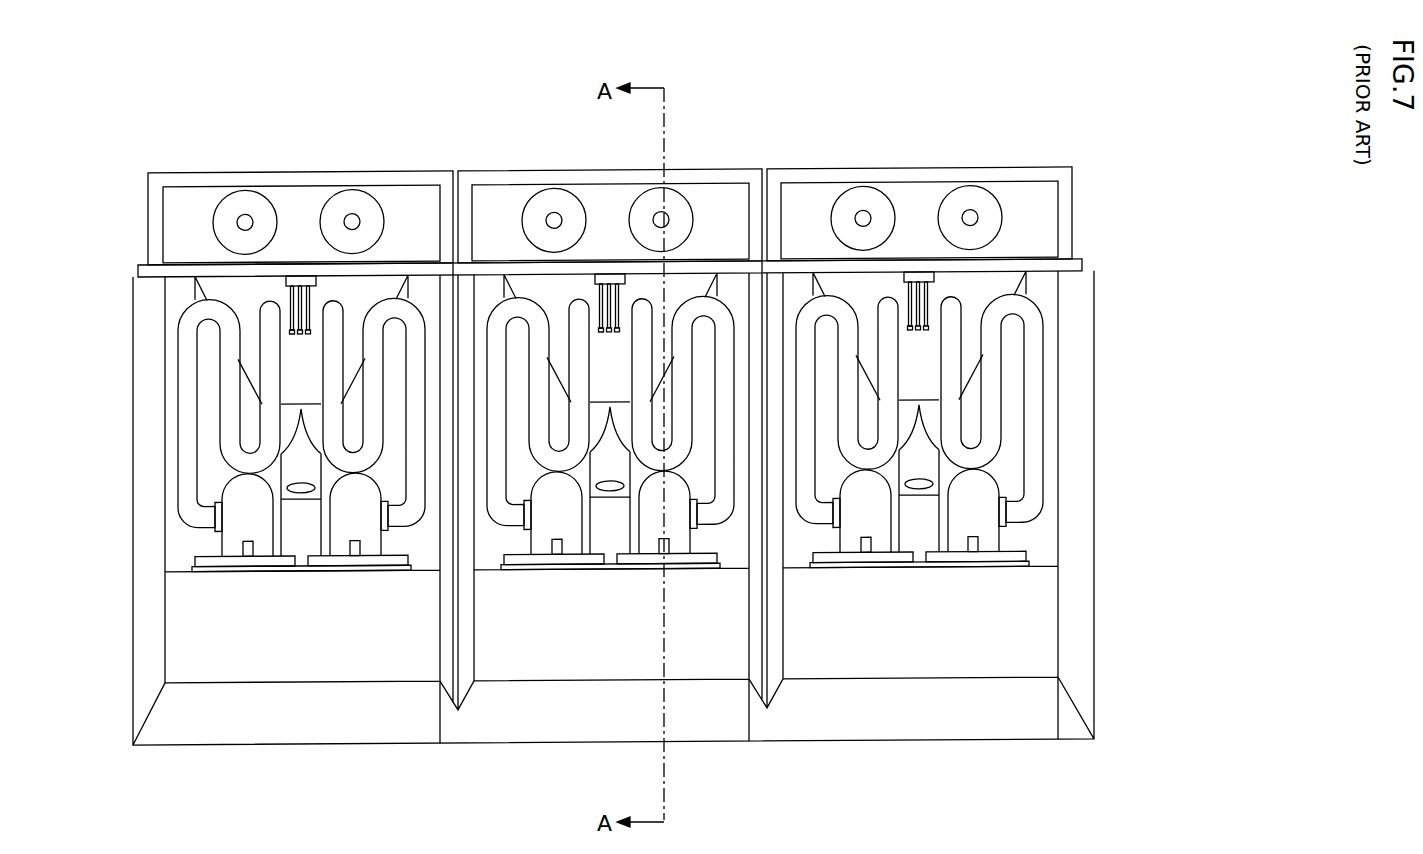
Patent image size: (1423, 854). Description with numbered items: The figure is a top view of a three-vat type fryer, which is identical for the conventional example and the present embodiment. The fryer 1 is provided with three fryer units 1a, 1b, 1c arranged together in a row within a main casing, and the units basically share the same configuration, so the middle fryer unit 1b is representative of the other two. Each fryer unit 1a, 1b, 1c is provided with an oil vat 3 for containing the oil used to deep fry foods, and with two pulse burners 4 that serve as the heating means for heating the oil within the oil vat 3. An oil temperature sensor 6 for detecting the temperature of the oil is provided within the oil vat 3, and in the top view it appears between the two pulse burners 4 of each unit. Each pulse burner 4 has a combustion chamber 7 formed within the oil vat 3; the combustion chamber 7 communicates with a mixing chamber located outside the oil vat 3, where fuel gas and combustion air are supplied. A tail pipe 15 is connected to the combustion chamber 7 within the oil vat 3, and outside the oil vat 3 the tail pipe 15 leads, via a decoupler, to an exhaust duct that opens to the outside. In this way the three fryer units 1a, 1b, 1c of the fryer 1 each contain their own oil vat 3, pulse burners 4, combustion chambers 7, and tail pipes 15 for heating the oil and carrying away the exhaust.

The fryer 1 is at (687, 402).
The fryer unit 1a is at (260, 152).
The fryer unit 1b is at (694, 142).
The fryer unit 1c is at (851, 140).
The oil vat 3 is at (634, 321).
The pulse burner 4 is at (1034, 530).
The oil temperature sensor 6 is at (312, 282).
The combustion chamber 7 is at (228, 542).
The tail pipe 15 is at (636, 330).